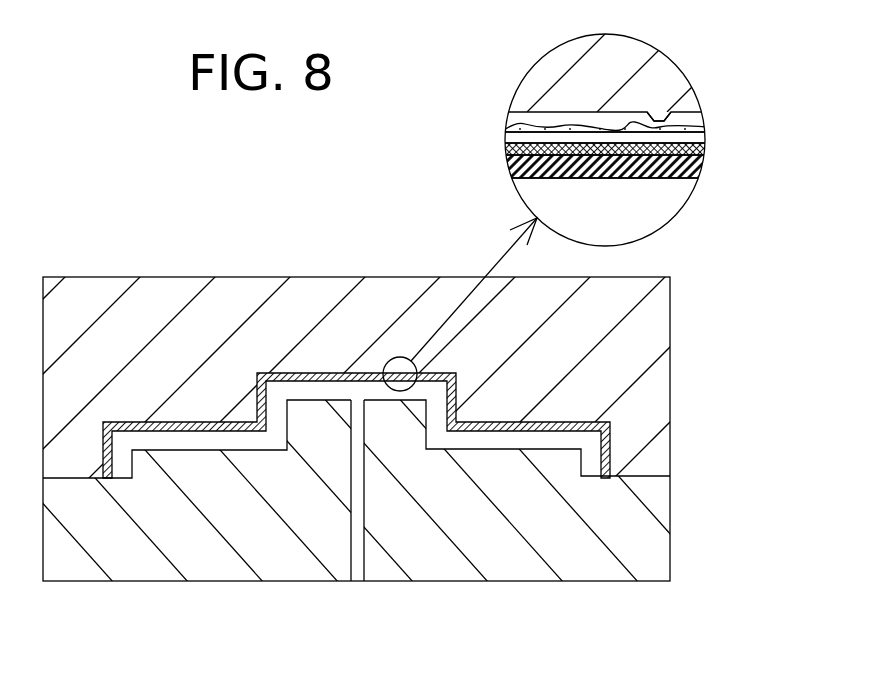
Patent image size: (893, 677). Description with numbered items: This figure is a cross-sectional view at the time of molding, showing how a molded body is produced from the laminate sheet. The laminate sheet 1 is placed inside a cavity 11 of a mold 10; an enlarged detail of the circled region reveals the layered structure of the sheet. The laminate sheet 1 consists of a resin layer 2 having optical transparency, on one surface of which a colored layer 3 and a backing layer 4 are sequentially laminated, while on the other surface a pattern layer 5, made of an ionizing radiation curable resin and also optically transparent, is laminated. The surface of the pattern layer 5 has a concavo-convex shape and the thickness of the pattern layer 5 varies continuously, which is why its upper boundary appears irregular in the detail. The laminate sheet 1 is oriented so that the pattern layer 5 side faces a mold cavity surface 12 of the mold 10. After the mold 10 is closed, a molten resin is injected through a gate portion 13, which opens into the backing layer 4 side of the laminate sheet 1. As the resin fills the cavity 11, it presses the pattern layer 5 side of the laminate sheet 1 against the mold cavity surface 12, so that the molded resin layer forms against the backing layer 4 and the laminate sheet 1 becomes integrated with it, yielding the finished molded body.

The laminate sheet 1 is at (313, 373).
The resin layer 2 is at (693, 140).
The colored layer 3 is at (705, 148).
The backing layer 4 is at (705, 162).
The pattern layer 5 is at (702, 128).
The mold 10 is at (655, 330).
The cavity 11 is at (503, 437).
The mold cavity surface 12 is at (658, 121).
The gate portion 13 is at (350, 537).